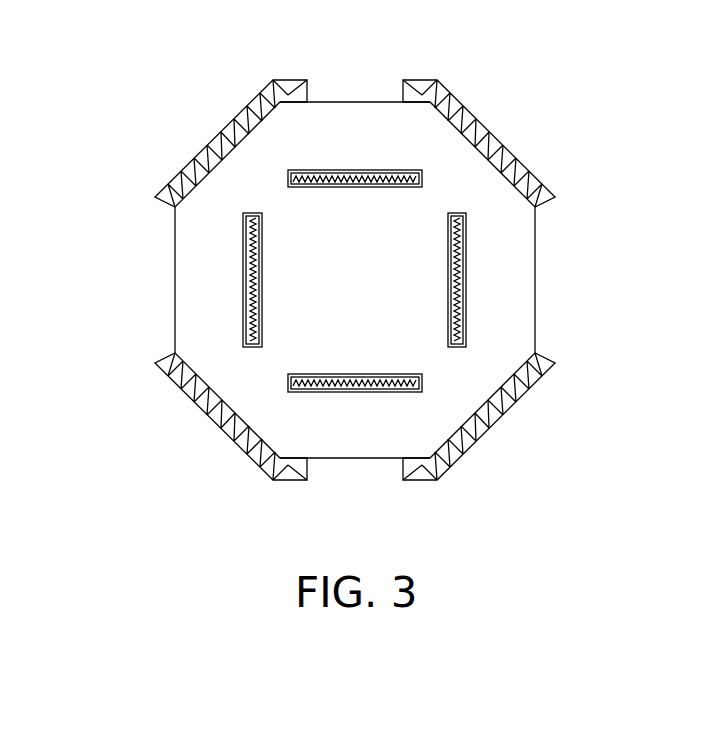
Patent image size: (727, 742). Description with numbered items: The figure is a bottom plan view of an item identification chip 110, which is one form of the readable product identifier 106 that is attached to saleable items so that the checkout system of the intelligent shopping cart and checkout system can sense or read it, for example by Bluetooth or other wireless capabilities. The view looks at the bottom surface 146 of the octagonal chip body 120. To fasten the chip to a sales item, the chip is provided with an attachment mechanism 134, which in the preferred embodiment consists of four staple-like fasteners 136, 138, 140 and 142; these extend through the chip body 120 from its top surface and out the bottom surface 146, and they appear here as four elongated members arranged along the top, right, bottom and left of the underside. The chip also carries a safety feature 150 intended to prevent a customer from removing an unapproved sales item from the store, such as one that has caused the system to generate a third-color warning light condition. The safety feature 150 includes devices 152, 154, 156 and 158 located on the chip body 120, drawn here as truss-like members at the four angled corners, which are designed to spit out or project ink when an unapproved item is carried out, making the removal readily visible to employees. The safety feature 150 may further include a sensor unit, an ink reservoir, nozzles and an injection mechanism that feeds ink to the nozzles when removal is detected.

The readable product identifier 106 is at (121, 64).
The item identification chip 110 is at (131, 99).
The chip body 120 is at (535, 222).
The attachment mechanism 134 is at (480, 262).
The staple-like fastener 136 is at (360, 170).
The staple-like fastener 138 is at (466, 290).
The staple-like fastener 140 is at (325, 392).
The staple-like fastener 142 is at (243, 290).
The bottom surface 146 is at (453, 173).
The safety feature 150 is at (505, 138).
The ink projecting device 152 is at (520, 163).
The ink projecting device 154 is at (515, 400).
The ink projecting device 156 is at (232, 436).
The ink projecting device 158 is at (232, 128).